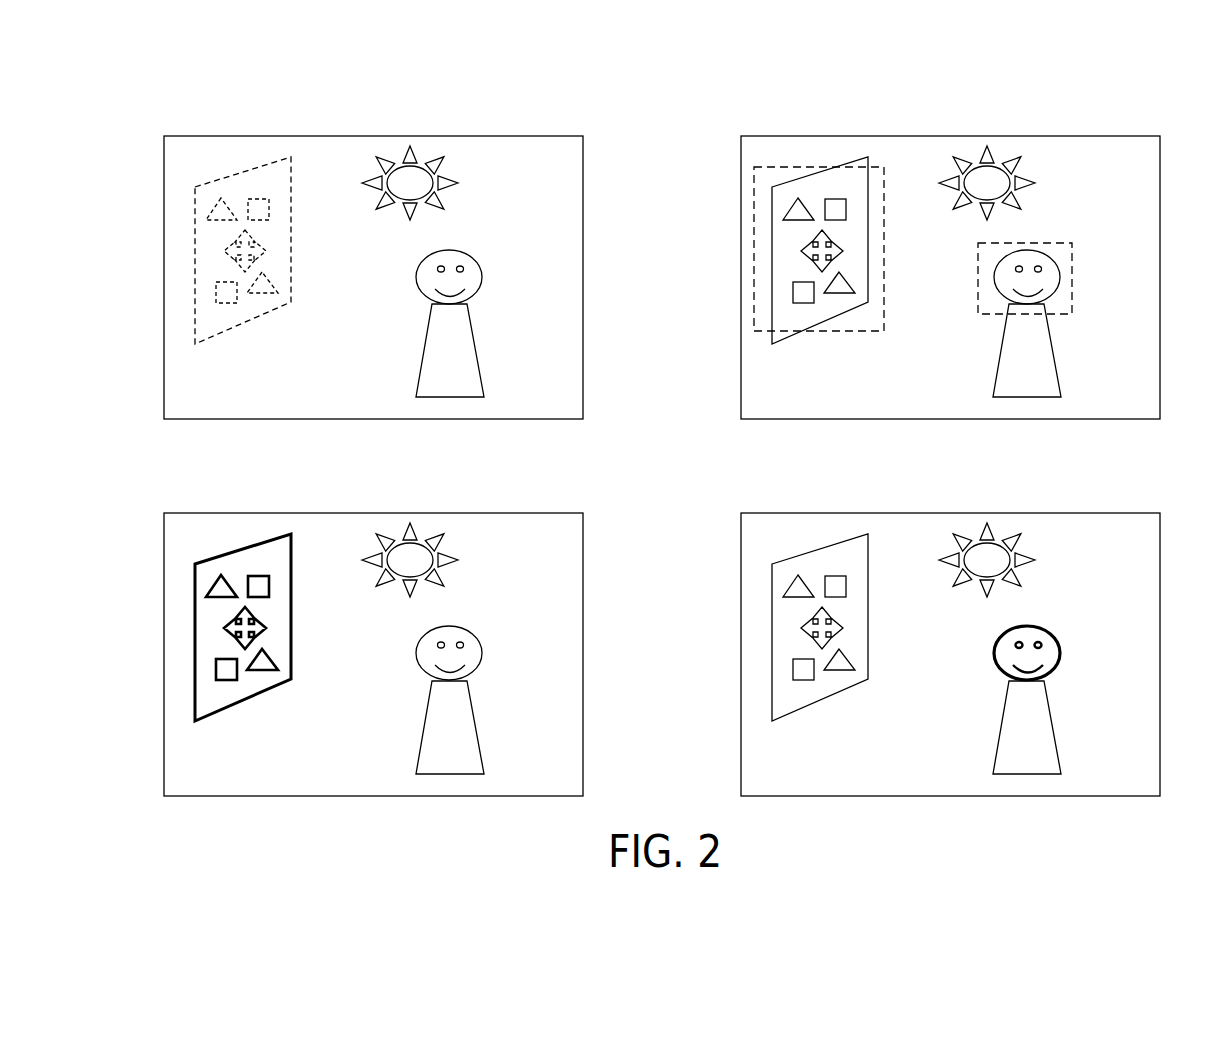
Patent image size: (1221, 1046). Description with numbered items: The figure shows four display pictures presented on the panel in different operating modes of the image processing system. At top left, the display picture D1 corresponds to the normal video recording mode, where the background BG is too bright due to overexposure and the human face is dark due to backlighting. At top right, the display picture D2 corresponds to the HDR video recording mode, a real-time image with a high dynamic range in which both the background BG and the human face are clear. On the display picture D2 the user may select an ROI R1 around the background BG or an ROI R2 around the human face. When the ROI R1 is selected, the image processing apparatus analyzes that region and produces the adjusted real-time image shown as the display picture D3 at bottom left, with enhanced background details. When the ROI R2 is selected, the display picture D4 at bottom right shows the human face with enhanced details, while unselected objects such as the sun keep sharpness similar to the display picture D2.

The display picture D1 is at (514, 135).
The display picture D2 is at (1090, 135).
The display picture D3 is at (514, 512).
The display picture D4 is at (1090, 512).
The background BG is at (223, 177).
The ROI R1 is at (753, 238).
The ROI R2 is at (1072, 270).